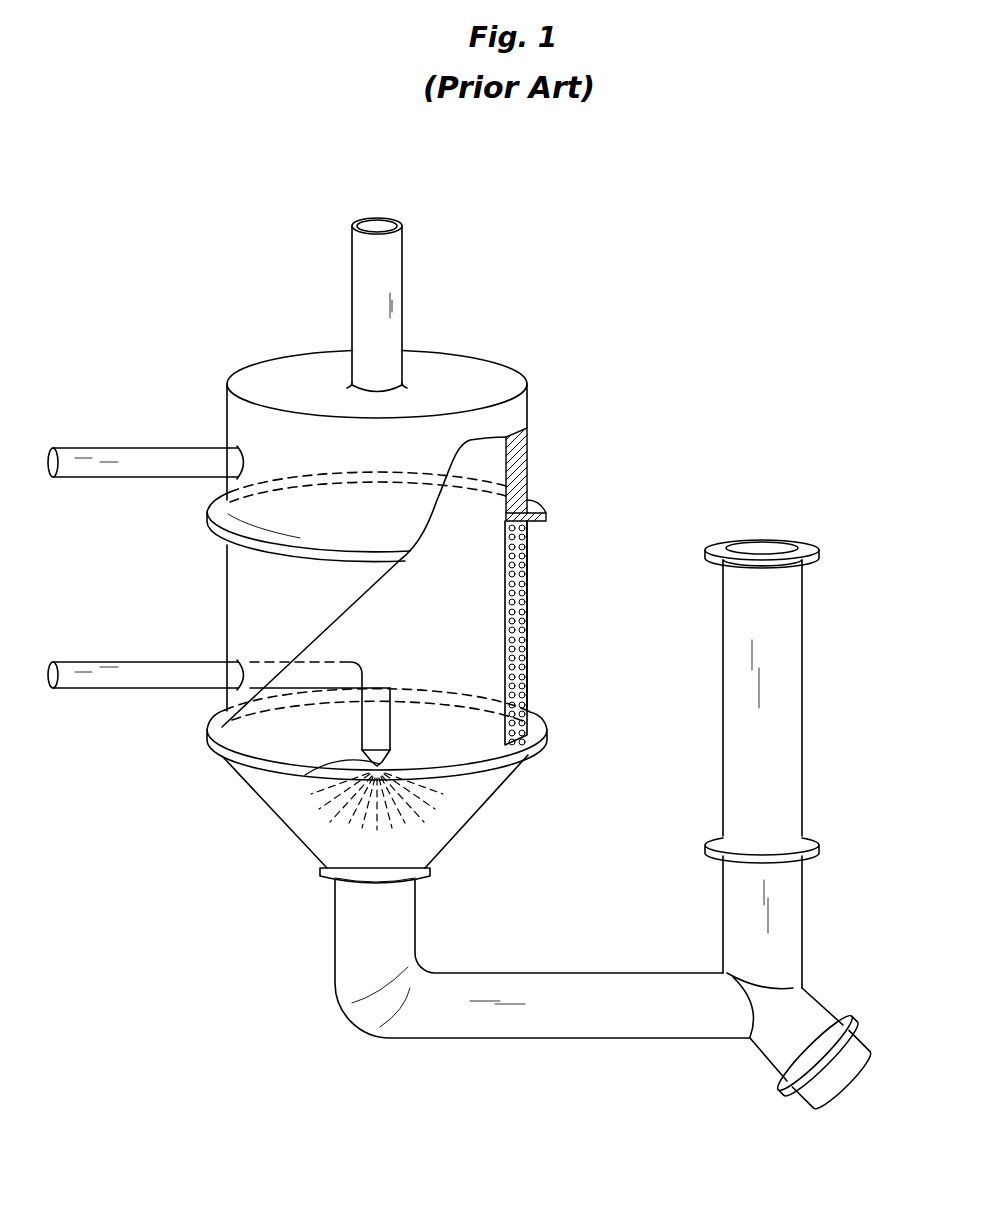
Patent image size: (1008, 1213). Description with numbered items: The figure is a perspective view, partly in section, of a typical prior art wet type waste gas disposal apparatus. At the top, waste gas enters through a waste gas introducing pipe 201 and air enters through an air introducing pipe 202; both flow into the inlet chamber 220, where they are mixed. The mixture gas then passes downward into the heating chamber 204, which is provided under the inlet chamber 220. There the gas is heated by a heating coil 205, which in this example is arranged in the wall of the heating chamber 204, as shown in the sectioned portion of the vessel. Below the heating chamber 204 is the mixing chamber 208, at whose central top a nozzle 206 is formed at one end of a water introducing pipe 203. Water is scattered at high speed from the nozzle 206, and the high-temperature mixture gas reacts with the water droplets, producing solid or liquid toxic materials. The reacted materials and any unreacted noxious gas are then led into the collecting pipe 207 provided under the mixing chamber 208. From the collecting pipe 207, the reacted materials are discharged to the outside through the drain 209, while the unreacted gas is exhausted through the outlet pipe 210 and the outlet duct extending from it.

The waste gas introducing pipe 201 is at (395, 252).
The air introducing pipe 202 is at (133, 455).
The water introducing pipe 203 is at (130, 665).
The heating chamber 204 is at (554, 633).
The heating coil 205 is at (514, 583).
The nozzle 206 is at (362, 756).
The collecting pipe 207 is at (583, 980).
The mixing chamber 208 is at (463, 813).
The drain 209 is at (857, 1050).
The outlet pipe 210 is at (793, 720).
The inlet chamber 220 is at (528, 463).